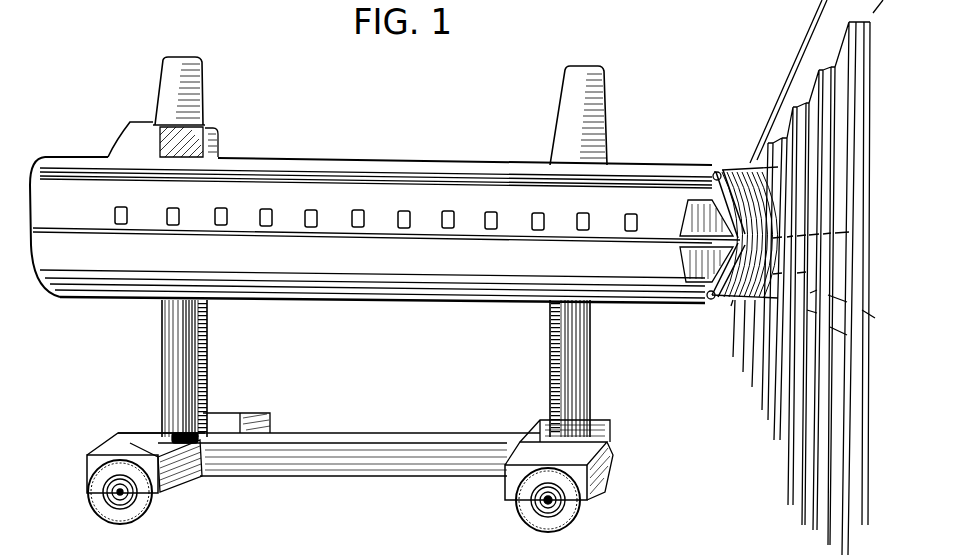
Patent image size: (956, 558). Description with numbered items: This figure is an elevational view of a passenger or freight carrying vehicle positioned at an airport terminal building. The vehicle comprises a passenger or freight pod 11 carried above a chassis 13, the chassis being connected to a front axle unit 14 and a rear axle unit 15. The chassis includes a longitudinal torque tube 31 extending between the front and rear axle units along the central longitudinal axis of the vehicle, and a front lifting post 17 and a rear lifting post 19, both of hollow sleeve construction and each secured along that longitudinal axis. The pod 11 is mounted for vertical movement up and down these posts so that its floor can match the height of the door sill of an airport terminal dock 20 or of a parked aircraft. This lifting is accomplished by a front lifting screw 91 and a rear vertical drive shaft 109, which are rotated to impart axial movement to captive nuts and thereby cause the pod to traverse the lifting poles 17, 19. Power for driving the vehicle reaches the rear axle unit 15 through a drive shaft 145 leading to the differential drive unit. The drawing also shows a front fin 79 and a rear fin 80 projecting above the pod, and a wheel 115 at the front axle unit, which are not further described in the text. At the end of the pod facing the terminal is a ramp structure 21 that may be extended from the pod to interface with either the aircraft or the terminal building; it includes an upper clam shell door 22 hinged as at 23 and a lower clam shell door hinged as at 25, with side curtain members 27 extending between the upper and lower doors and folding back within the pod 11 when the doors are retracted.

The passenger or freight pod 11 is at (438, 158).
The chassis 13 is at (413, 489).
The front axle unit 14 is at (598, 494).
The rear axle unit 15 is at (174, 491).
The front lifting post 17 is at (590, 380).
The rear lifting post 19 is at (162, 380).
The airport terminal dock 20 is at (784, 68).
The ramp structure 21 is at (729, 302).
The upper clam shell door 22 is at (733, 168).
The hinge of upper clam shell door 23 is at (713, 170).
The hinge of lower clam shell door 25 is at (710, 305).
The side curtain members 27 is at (750, 165).
The longitudinal torque tube 31 is at (392, 433).
The front fin 79 is at (203, 100).
The rear fin 80 is at (561, 102).
The front lifting screw 91 is at (207, 352).
The rear vertical drive shaft 109 is at (550, 371).
The right wheel 115 is at (533, 522).
The drive shaft 145 is at (105, 522).